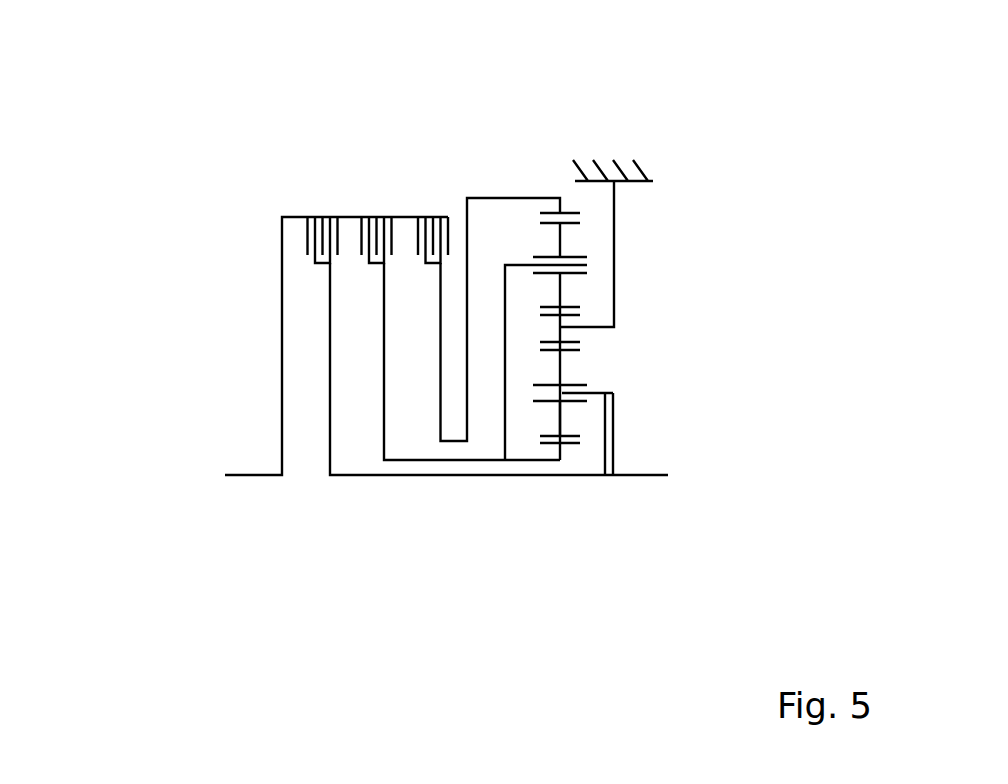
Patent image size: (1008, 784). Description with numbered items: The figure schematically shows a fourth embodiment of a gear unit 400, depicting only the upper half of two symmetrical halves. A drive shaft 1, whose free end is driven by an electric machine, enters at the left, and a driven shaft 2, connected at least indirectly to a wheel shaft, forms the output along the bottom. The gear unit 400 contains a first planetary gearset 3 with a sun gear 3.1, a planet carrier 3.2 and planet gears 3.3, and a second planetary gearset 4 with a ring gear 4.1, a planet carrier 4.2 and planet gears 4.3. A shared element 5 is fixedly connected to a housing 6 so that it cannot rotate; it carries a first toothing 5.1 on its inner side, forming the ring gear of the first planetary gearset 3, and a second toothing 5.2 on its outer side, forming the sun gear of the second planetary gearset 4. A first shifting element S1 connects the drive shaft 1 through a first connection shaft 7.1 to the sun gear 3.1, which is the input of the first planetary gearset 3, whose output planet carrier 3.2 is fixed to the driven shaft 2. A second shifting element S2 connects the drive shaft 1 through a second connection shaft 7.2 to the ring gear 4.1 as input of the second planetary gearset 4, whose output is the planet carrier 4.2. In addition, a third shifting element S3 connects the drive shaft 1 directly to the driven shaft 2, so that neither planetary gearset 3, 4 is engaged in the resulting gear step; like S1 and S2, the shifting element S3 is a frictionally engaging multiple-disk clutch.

The gear unit 400 is at (193, 137).
The drive shaft 1 is at (253, 475).
The driven shaft 2 is at (653, 477).
The first planetary gearset 3 is at (597, 380).
The sun gear 3.1 is at (574, 444).
The planet carrier 3.2 is at (605, 475).
The planet gears 3.3 is at (560, 418).
The second planetary gearset 4 is at (593, 258).
The ring gear 4.1 is at (550, 212).
The planet carrier 4.2 is at (520, 262).
The planet gears 4.3 is at (562, 240).
The shared element 5 is at (560, 333).
The first toothing 5.1 is at (582, 340).
The second toothing 5.2 is at (580, 323).
The housing 6 is at (620, 180).
The first connection shaft 7.1 is at (384, 428).
The second connection shaft 7.2 is at (465, 213).
The first shifting element S1 is at (373, 213).
The second shifting element S2 is at (430, 213).
The third shifting element S3 is at (303, 233).